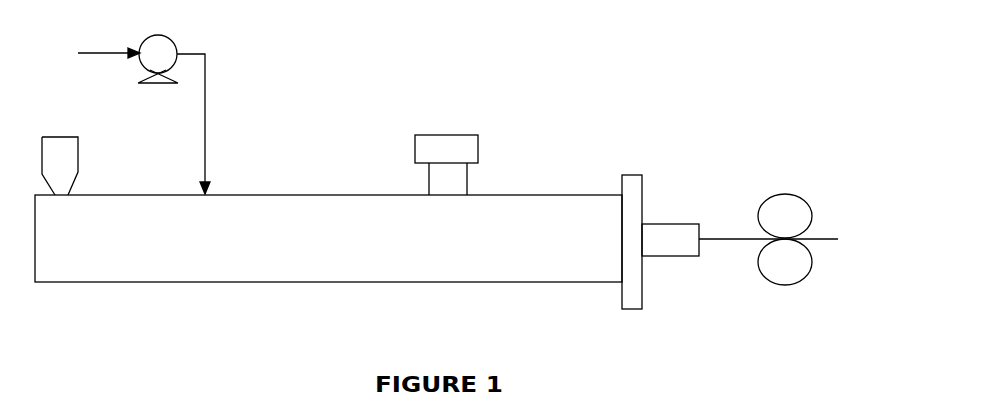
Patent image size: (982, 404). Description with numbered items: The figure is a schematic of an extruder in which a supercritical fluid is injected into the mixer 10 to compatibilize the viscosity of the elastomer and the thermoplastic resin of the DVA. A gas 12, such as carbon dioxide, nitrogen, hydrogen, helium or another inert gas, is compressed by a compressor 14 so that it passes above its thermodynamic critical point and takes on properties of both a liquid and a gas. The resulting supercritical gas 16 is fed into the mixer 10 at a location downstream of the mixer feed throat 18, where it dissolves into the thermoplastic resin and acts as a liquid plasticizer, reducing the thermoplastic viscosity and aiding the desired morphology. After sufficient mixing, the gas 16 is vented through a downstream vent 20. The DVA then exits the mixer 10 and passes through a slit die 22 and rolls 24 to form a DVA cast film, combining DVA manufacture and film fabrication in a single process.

The mixer 10 is at (318, 245).
The gas 12 is at (108, 52).
The compressor 14 is at (160, 53).
The supercritical gas 16 is at (205, 136).
The mixer feed throat 18 is at (67, 162).
The downstream vent 20 is at (455, 147).
The slit die 22 is at (665, 240).
The rolls 24 is at (792, 265).